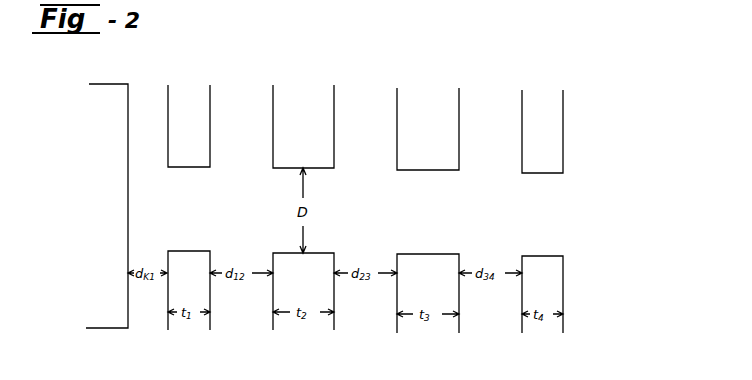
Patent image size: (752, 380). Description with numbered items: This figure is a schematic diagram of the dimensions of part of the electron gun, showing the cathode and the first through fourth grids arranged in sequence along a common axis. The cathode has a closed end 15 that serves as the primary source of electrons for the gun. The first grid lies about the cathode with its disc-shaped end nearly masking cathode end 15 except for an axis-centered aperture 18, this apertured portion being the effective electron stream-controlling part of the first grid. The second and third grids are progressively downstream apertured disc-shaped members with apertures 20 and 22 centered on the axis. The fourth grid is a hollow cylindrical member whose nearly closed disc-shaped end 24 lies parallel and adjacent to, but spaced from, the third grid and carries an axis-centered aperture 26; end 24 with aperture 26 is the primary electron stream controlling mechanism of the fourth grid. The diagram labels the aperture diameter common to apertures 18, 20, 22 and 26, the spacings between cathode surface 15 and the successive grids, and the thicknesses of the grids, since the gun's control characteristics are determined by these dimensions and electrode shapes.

The closed end of cathode K 15 is at (128, 204).
The aperture of grid G1 18 is at (197, 186).
The aperture of grid G2 20 is at (329, 188).
The aperture of grid G3 22 is at (448, 190).
The disc-shaped end of grid G4 24 is at (563, 124).
The aperture of grid G4 26 is at (558, 195).